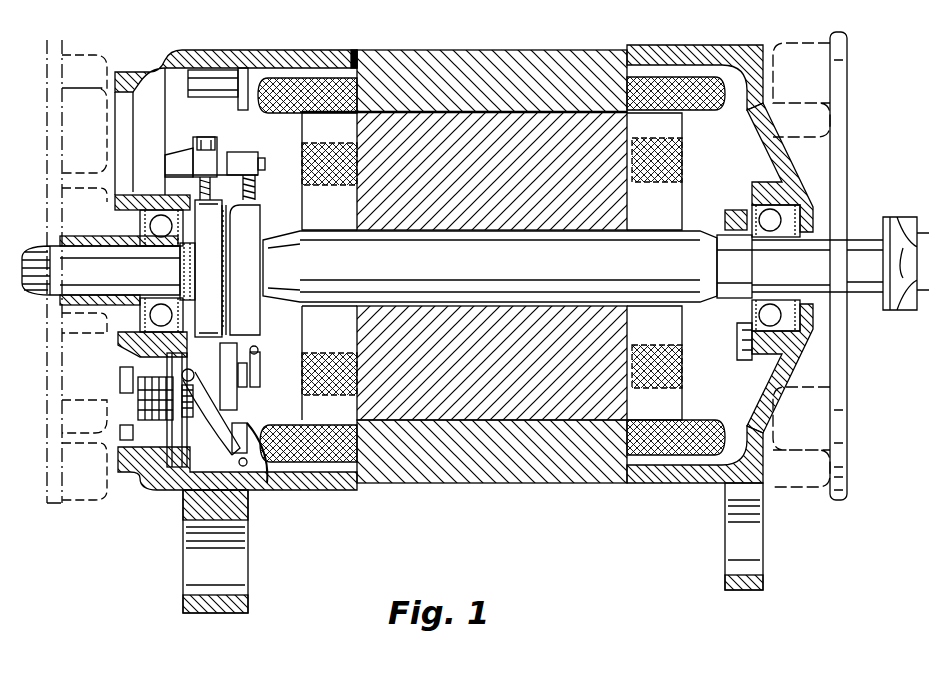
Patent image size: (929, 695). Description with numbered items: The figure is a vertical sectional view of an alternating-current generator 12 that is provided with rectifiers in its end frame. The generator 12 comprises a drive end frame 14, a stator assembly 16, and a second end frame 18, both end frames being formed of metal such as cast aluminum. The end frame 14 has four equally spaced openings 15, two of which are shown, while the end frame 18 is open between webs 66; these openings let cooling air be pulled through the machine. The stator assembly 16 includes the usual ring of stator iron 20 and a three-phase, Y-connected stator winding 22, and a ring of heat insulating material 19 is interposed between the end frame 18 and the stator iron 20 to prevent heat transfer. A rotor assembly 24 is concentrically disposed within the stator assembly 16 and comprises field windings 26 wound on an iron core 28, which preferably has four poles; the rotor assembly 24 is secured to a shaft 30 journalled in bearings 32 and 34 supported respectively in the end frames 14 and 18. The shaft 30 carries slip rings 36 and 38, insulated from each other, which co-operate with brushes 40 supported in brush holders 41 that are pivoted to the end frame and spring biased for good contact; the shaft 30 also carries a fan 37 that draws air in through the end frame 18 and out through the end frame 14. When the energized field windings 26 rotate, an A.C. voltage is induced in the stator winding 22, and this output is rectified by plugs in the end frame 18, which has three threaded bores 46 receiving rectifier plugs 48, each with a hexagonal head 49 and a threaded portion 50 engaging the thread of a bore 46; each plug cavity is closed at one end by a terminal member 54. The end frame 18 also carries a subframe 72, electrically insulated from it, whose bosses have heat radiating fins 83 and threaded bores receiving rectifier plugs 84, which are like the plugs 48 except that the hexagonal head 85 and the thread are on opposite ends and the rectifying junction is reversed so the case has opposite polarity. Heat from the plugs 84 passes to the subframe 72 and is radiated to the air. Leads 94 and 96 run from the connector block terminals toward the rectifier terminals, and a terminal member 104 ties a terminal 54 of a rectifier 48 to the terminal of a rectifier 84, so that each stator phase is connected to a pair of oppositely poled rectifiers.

The alternating-current generator 12 is at (695, 46).
The drive end frame 14 is at (752, 50).
The openings 15 is at (782, 160).
The stator assembly 16 is at (545, 470).
The second end frame 18 is at (203, 52).
The ring of heat insulating material 19 is at (360, 52).
The stator iron 20 is at (508, 62).
The stator winding 22 is at (695, 93).
The rotor assembly 24 is at (620, 410).
The field windings 26 is at (673, 200).
The iron core 28 is at (380, 137).
The shaft 30 is at (475, 263).
The bearing 32 is at (787, 202).
The bearing 34 is at (145, 226).
The slip ring 36 is at (205, 262).
The fan 37 is at (805, 75).
The slip ring 38 is at (245, 270).
The brushes 40 is at (256, 190).
The brush holders 41 is at (240, 158).
The threaded bores 46 is at (120, 466).
The rectifier plugs 48 is at (135, 432).
The hexagonal head 49 is at (130, 385).
The threaded portion 50 is at (140, 405).
The terminal member 54 is at (185, 445).
The webs 66 is at (150, 352).
The subframe 72 is at (185, 495).
The heat radiating fins 83 is at (200, 357).
The rectifier plugs 84 is at (240, 376).
The hexagonal head 85 is at (232, 405).
The lead 94 is at (268, 470).
The lead 96 is at (222, 455).
The terminal member 104 is at (258, 370).